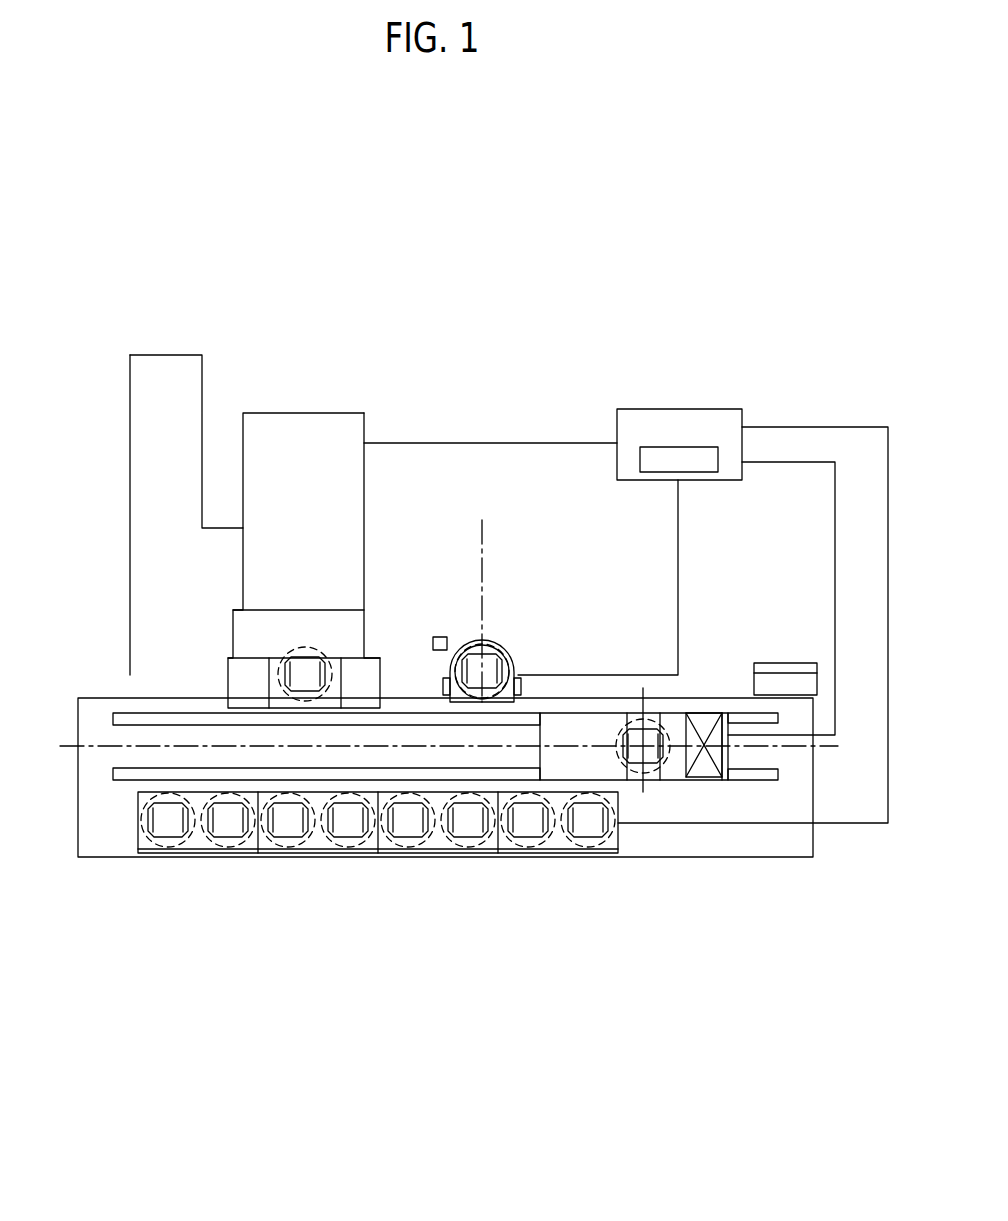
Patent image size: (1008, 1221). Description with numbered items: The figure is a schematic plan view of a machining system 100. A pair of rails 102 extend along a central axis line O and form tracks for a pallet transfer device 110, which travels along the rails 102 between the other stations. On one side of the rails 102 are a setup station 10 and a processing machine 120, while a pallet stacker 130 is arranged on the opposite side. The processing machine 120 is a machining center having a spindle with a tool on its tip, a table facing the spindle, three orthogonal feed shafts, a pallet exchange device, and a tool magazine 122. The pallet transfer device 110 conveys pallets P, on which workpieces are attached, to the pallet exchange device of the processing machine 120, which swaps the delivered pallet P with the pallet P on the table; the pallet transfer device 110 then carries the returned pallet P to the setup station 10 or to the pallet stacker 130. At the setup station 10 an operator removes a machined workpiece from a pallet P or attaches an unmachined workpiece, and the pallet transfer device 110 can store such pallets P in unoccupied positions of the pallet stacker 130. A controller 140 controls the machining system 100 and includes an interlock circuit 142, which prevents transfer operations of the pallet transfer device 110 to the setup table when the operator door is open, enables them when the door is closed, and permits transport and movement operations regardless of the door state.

The machining system 100 is at (780, 318).
The rails 102 is at (122, 718).
The setup station 10 is at (515, 595).
The pallet transfer device 110 is at (715, 670).
The processing machine 120 is at (418, 407).
The tool magazine 122 is at (167, 372).
The pallet stacker 130 is at (368, 883).
The controller 140 is at (662, 408).
The interlock circuit 142 is at (698, 447).
The pallet P is at (304, 672).
The central axis line O is at (460, 746).